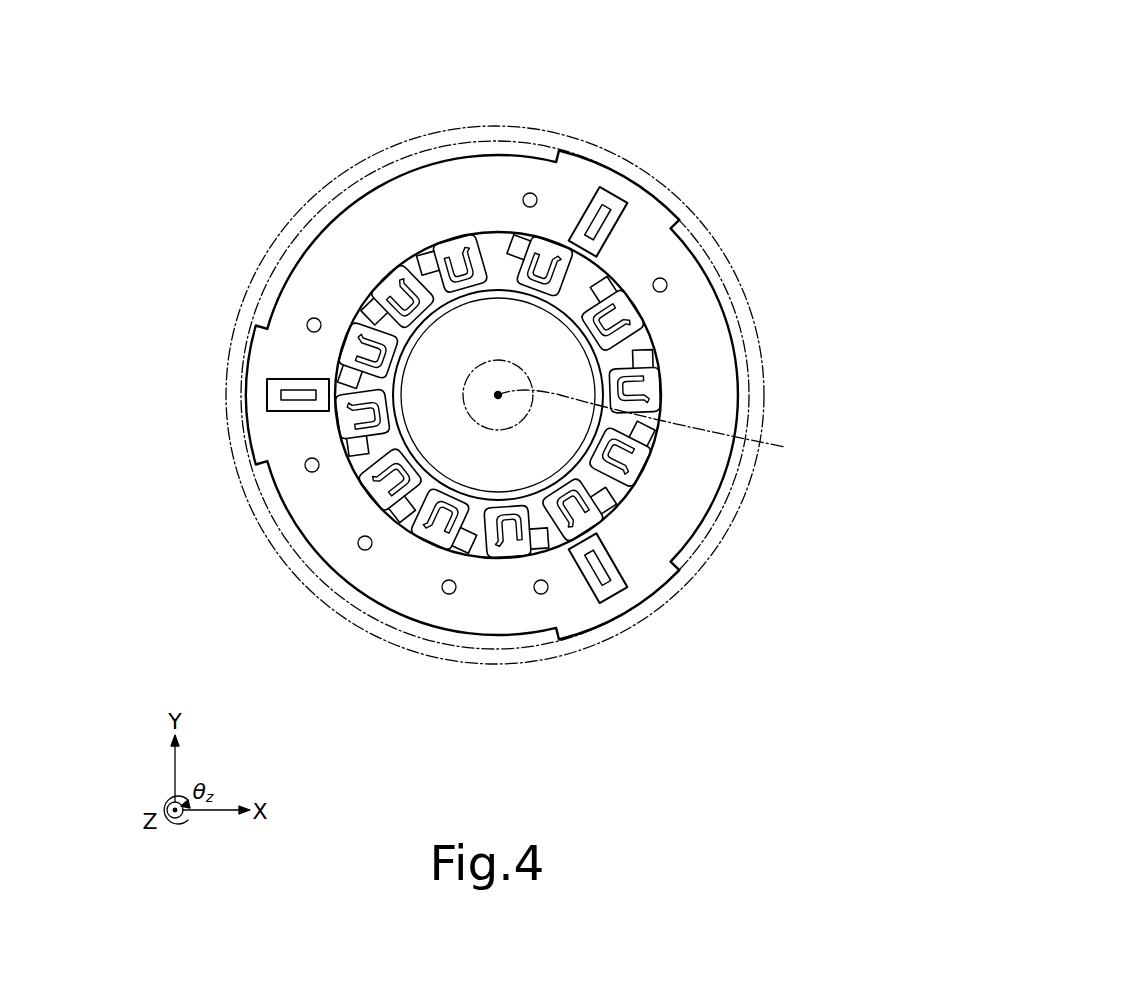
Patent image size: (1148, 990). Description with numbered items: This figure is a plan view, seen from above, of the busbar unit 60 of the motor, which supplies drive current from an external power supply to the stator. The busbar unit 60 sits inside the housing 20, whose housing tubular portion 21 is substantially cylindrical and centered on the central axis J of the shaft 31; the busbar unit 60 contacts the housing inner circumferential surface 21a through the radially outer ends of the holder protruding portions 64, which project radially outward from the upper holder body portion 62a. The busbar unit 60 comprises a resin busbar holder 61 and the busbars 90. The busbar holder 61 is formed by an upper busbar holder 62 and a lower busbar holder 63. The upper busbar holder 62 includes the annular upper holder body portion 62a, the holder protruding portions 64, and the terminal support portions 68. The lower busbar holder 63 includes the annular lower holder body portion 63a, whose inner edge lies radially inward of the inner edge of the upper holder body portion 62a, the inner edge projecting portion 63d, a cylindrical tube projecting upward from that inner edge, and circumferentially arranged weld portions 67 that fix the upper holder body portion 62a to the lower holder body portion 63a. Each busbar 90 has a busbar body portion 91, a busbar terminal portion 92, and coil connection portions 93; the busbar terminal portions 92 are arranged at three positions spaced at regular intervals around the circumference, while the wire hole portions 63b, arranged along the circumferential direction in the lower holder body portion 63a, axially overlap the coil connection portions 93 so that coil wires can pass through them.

The busbar unit 60 is at (745, 99).
The housing 20 is at (495, 346).
The housing tubular portion 21 is at (527, 132).
The housing inner circumferential surface 21a is at (383, 172).
The shaft 31 is at (498, 360).
The central axis J is at (649, 426).
The busbar holder 61 is at (387, 684).
The upper busbar holder 62 is at (353, 594).
The upper holder body portion 62a is at (700, 362).
The lower busbar holder 63 is at (406, 538).
The lower holder body portion 63a is at (592, 482).
The wire hole portions 63b is at (648, 355).
The inner edge projecting portion 63d is at (468, 270).
The holder protruding portions 64 is at (630, 153).
The weld portions 67 is at (537, 197).
The terminal support portions 68 is at (605, 197).
The busbars 90 is at (503, 397).
The busbar body portion 91 is at (402, 397).
The busbar terminal portion 92 is at (608, 220).
The coil connection portions 93 is at (503, 397).